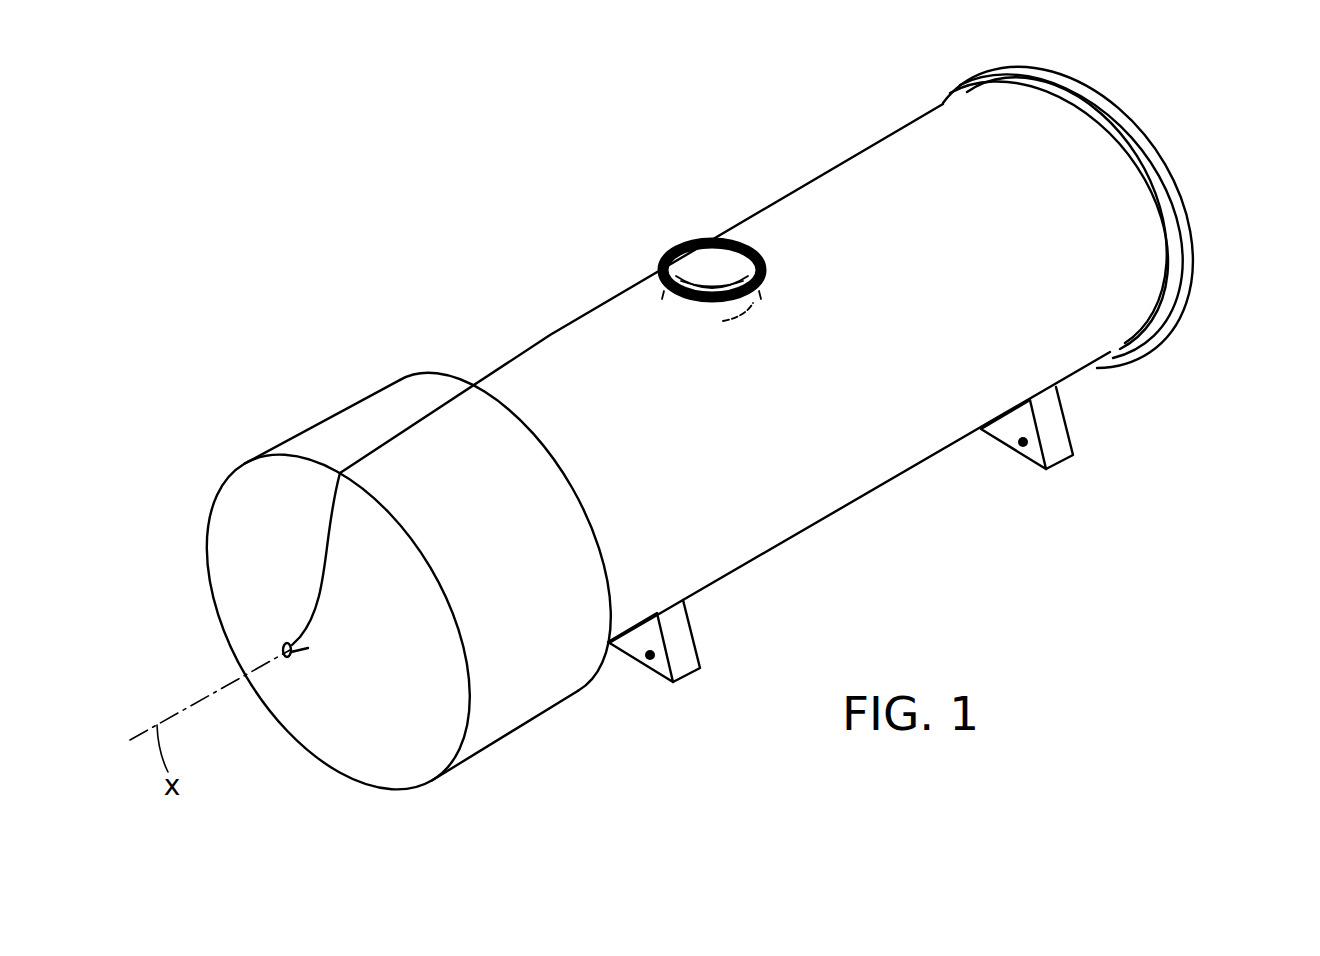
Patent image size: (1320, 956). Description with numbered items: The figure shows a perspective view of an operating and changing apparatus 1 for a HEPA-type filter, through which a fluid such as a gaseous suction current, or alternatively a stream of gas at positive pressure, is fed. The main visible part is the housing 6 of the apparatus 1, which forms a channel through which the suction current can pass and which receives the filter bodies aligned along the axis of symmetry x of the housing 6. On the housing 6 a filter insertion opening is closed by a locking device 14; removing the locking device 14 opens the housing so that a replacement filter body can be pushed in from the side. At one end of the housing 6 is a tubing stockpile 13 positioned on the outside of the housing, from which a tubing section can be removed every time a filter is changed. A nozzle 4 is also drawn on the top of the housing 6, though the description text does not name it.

The operating and changing apparatus 1 is at (540, 252).
The nozzle 4 is at (700, 253).
The housing 6 is at (826, 518).
The tubing stockpile 13 is at (530, 708).
The locking device 14 is at (1183, 273).